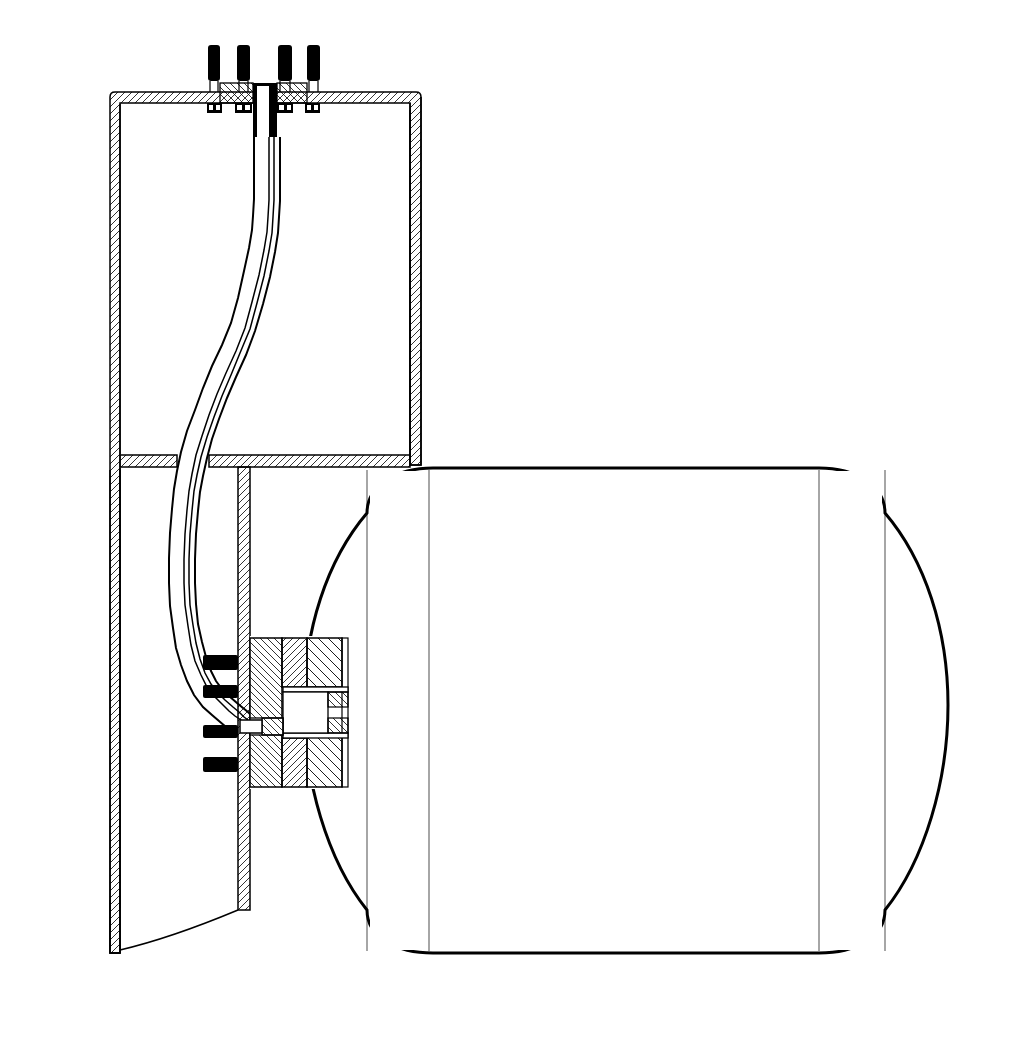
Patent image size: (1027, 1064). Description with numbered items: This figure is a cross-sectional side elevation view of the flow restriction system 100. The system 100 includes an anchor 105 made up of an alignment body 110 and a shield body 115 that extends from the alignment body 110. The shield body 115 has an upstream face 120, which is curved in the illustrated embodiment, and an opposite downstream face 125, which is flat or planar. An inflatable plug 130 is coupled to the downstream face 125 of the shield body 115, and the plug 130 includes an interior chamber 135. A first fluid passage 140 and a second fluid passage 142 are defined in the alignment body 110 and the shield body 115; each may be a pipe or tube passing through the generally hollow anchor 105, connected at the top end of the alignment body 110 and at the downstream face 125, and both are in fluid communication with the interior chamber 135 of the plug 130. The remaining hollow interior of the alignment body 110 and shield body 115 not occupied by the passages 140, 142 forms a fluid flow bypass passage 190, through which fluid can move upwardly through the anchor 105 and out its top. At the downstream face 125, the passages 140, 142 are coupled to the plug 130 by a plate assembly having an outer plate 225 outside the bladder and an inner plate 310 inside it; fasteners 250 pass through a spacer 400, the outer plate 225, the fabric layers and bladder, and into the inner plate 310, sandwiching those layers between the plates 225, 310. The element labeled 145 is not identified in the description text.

The flow restriction system 100 is at (633, 232).
The anchor 105 is at (420, 260).
The alignment body 110 is at (420, 158).
The shield body 115 is at (110, 922).
The upstream face 120 is at (98, 821).
The downstream face 125 is at (263, 846).
The inflatable plug 130 is at (750, 955).
The interior chamber 135 is at (582, 562).
The first fluid passage 140 is at (232, 318).
The second fluid passage 142 is at (242, 383).
The housing inner wall 145 is at (430, 342).
The fluid flow bypass passage 190 is at (183, 165).
The outer plate 225 is at (288, 787).
The fasteners 250 is at (207, 731).
The inner plate 310 is at (345, 765).
The spacer 400 is at (260, 637).